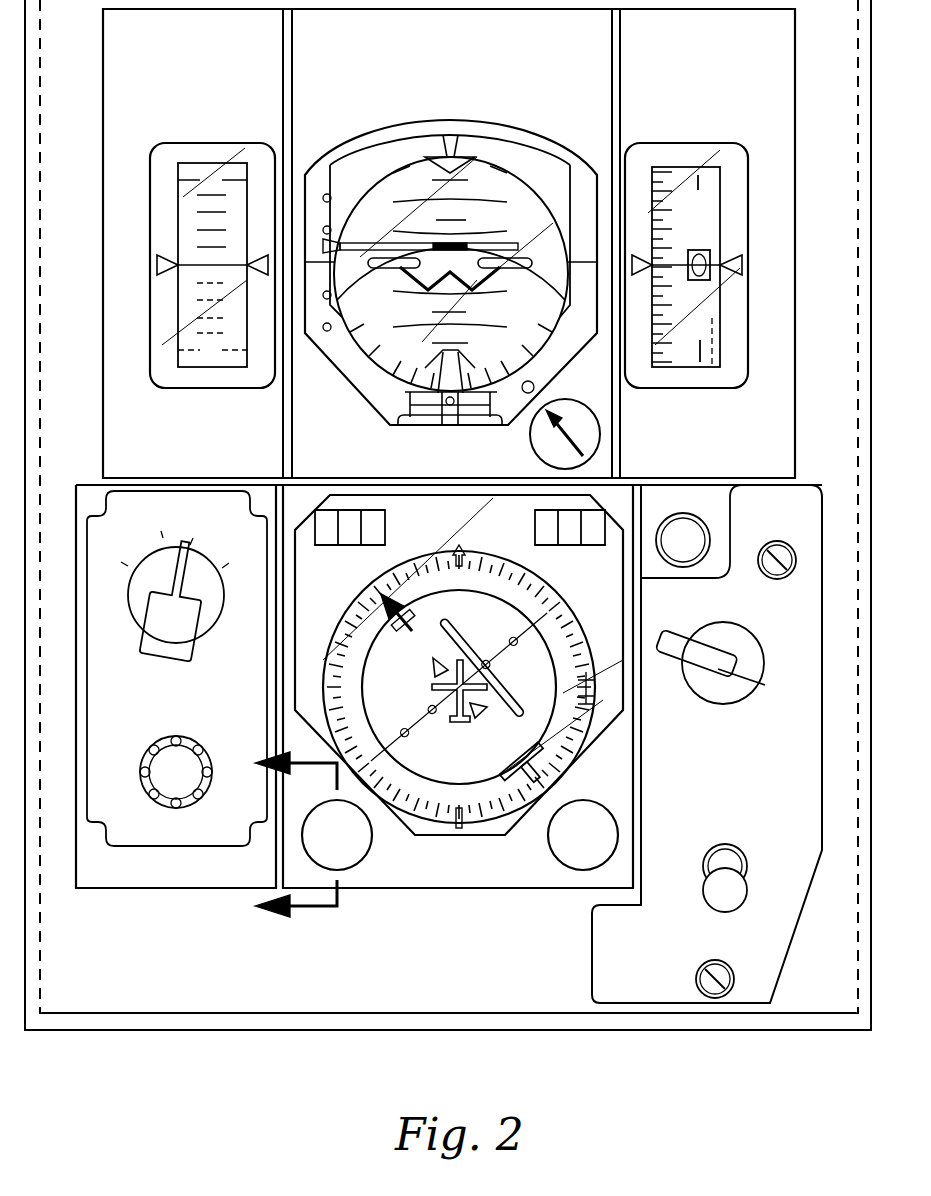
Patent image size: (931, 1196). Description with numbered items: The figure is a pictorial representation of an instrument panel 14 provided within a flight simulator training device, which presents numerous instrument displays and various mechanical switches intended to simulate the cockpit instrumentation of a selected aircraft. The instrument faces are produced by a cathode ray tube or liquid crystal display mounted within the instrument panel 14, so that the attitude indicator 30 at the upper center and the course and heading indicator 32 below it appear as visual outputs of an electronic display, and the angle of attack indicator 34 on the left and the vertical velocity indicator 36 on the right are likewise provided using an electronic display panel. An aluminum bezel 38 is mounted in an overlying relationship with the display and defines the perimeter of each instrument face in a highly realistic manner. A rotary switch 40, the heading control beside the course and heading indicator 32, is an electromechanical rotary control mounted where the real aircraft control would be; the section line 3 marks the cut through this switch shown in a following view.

The instrument panel 14 is at (507, 1014).
The aluminum bezel 38 is at (462, 962).
The attitude indicator 30 is at (482, 163).
The course and heading indicator 32 is at (474, 580).
The angle of attack indicator 34 is at (205, 163).
The vertical velocity indicator 36 is at (672, 167).
The rotary switch 40 is at (369, 851).
The section line 3- 3 is at (285, 836).